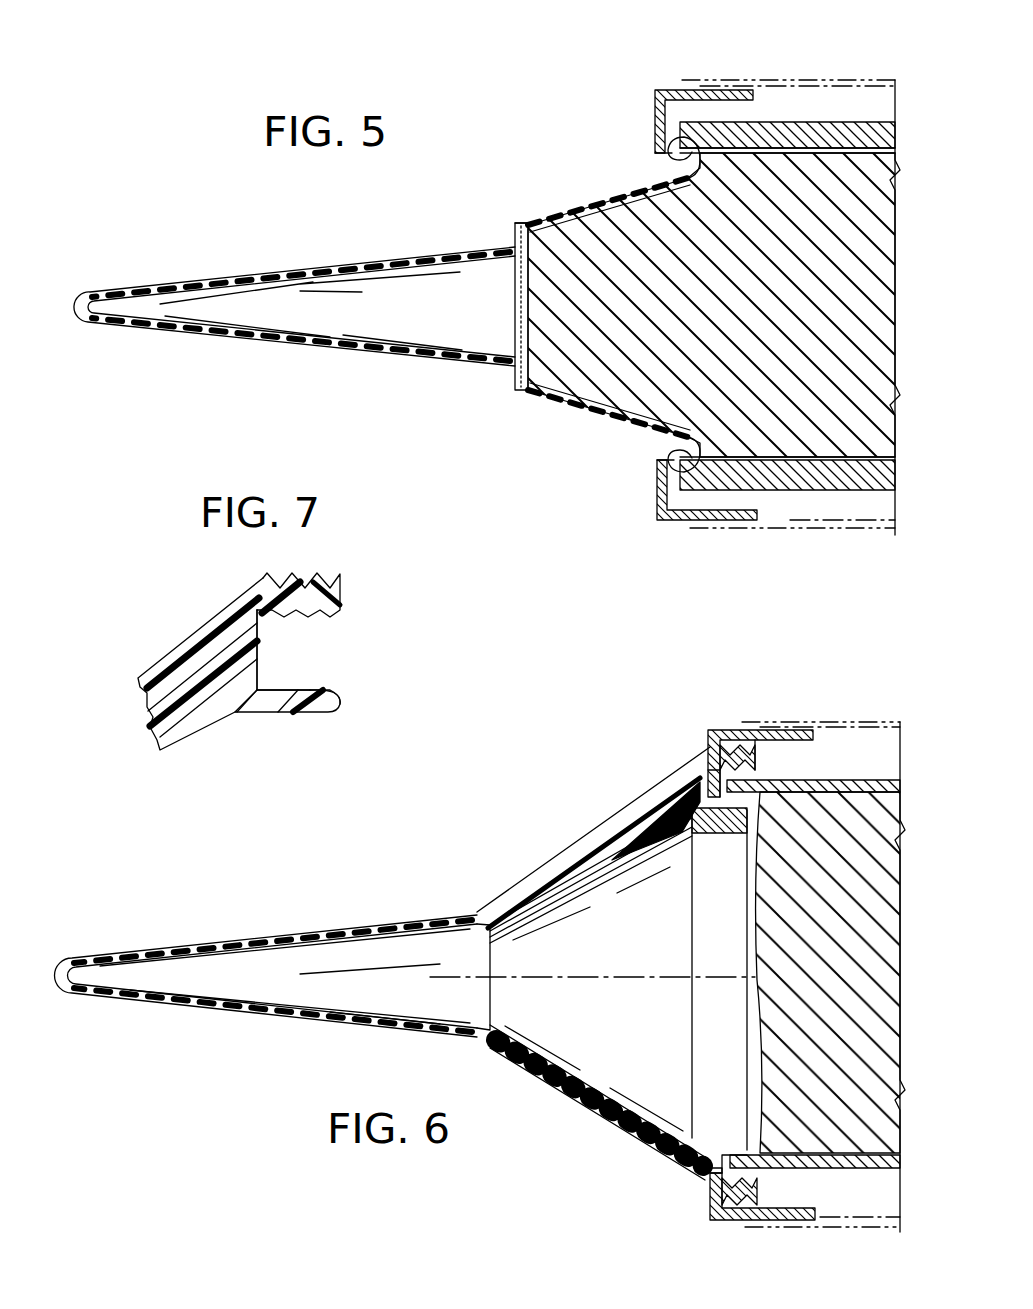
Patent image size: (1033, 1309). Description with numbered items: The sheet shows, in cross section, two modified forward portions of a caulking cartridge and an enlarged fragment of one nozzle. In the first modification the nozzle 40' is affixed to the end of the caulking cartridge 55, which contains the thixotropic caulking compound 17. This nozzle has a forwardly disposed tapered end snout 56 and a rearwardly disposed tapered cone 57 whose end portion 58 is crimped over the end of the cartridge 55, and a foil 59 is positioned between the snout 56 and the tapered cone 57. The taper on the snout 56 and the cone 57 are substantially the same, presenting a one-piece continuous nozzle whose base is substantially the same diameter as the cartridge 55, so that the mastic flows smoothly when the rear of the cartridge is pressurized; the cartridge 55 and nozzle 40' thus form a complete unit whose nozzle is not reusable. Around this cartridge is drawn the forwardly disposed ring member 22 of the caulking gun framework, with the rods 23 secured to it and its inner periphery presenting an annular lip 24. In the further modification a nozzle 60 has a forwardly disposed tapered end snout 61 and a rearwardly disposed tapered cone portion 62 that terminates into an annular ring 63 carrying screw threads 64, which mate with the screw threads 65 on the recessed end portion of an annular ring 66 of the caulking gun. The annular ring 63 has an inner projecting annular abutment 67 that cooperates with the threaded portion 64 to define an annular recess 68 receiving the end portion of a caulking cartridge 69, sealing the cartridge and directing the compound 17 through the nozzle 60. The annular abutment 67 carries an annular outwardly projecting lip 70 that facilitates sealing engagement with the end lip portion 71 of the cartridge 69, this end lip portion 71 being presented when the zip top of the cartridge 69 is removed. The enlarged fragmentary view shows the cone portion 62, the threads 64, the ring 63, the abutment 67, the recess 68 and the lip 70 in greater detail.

In FIG. 5, the caulking compound 17 is at (568, 372).
In FIG. 6, the caulking compound 17 is at (790, 926).
In FIG. 5, the ring member 22 is at (659, 86).
In FIG. 5, the rods 23 is at (800, 78).
In FIG. 5, the annular lip 24 is at (660, 142).
In FIG. 5, the nozzle 40' is at (496, 181).
In FIG. 5, the caulking cartridge 55 is at (793, 496).
In FIG. 5, the tapered end snout 56 is at (270, 268).
In FIG. 5, the tapered cone 57 is at (598, 412).
In FIG. 5, the end portion 58 is at (668, 455).
In FIG. 5, the foil 59 is at (522, 282).
In FIG. 6, the nozzle 60 is at (517, 836).
In FIG. 6, the tapered end snout 61 is at (222, 940).
In FIG. 7, the tapered cone portion 62 is at (172, 660).
In FIG. 6, the tapered cone portion 62 is at (598, 1128).
In FIG. 7, the annular ring 63 is at (360, 615).
In FIG. 6, the annular ring 63 is at (712, 838).
In FIG. 7, the screw threads 64 is at (315, 595).
In FIG. 6, the screw threads 64 is at (735, 1224).
In FIG. 6, the screw threads 65 is at (760, 750).
In FIG. 6, the annular ring 66 is at (723, 725).
In FIG. 7, the annular abutment 67 is at (333, 706).
In FIG. 6, the annular abutment 67 is at (737, 1150).
In FIG. 7, the annular recess 68 is at (285, 688).
In FIG. 6, the annular recess 68 is at (714, 1182).
In FIG. 6, the caulking cartridge 69 is at (860, 776).
In FIG. 7, the outwardly projecting lip 70 is at (330, 683).
In FIG. 6, the end lip portion 71 is at (714, 775).